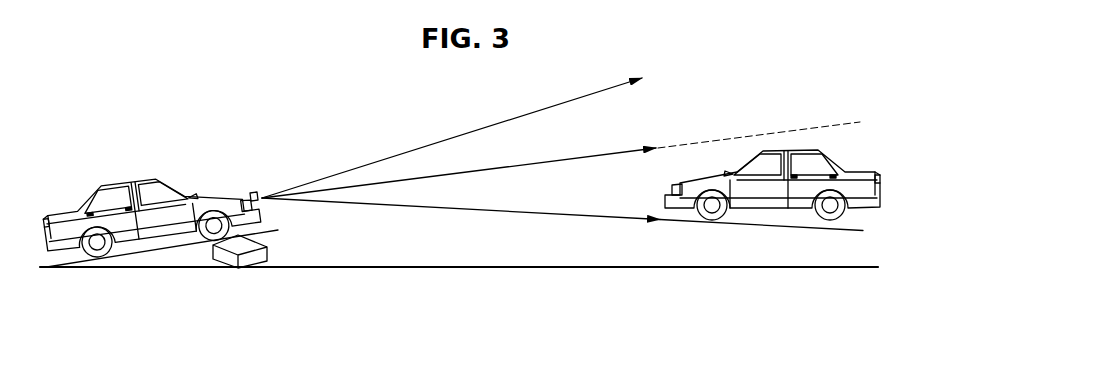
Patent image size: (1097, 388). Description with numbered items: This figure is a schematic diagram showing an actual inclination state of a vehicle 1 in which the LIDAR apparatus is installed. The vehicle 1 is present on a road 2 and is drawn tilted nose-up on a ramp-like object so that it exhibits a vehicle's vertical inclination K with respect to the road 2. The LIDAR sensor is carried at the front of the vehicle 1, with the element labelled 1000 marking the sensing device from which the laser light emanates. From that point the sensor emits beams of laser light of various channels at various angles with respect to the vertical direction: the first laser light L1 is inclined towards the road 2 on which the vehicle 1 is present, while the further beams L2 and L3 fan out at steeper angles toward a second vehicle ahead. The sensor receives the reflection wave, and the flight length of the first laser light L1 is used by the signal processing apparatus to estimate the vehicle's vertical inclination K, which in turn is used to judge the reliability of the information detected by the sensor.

The vehicle 1 is at (130, 178).
The lidar sensor device 1000 is at (256, 193).
The vehicle's vertical inclination K is at (127, 267).
The road 2 is at (450, 267).
The first laser light L1 is at (500, 212).
The laser light beam L2 is at (500, 167).
The laser light beam L3 is at (503, 122).